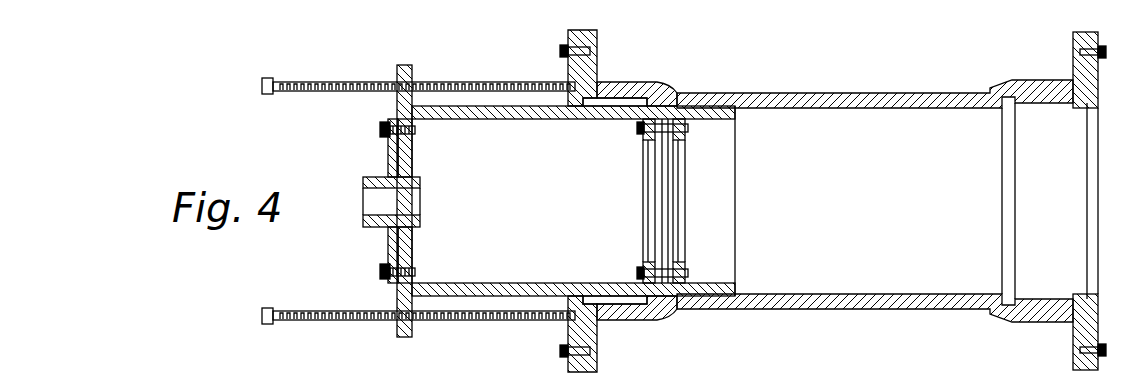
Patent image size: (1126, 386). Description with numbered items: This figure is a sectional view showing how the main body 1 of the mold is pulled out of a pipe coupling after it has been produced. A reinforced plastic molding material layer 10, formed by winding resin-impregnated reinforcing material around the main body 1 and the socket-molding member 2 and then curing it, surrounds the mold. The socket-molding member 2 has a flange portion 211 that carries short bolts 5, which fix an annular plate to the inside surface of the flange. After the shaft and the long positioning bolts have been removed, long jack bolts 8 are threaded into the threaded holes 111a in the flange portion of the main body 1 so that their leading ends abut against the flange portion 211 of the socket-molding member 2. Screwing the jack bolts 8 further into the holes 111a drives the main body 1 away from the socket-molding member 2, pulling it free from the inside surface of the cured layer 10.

The main body of the mold 1 is at (530, 283).
The socket-molding member 2 is at (628, 94).
The short bolt 5 is at (560, 50).
The jack bolt 8 is at (258, 80).
The reinforced plastic molding material layer 10 is at (850, 93).
The threaded hole 111a is at (397, 82).
The flange portion 211 is at (568, 66).